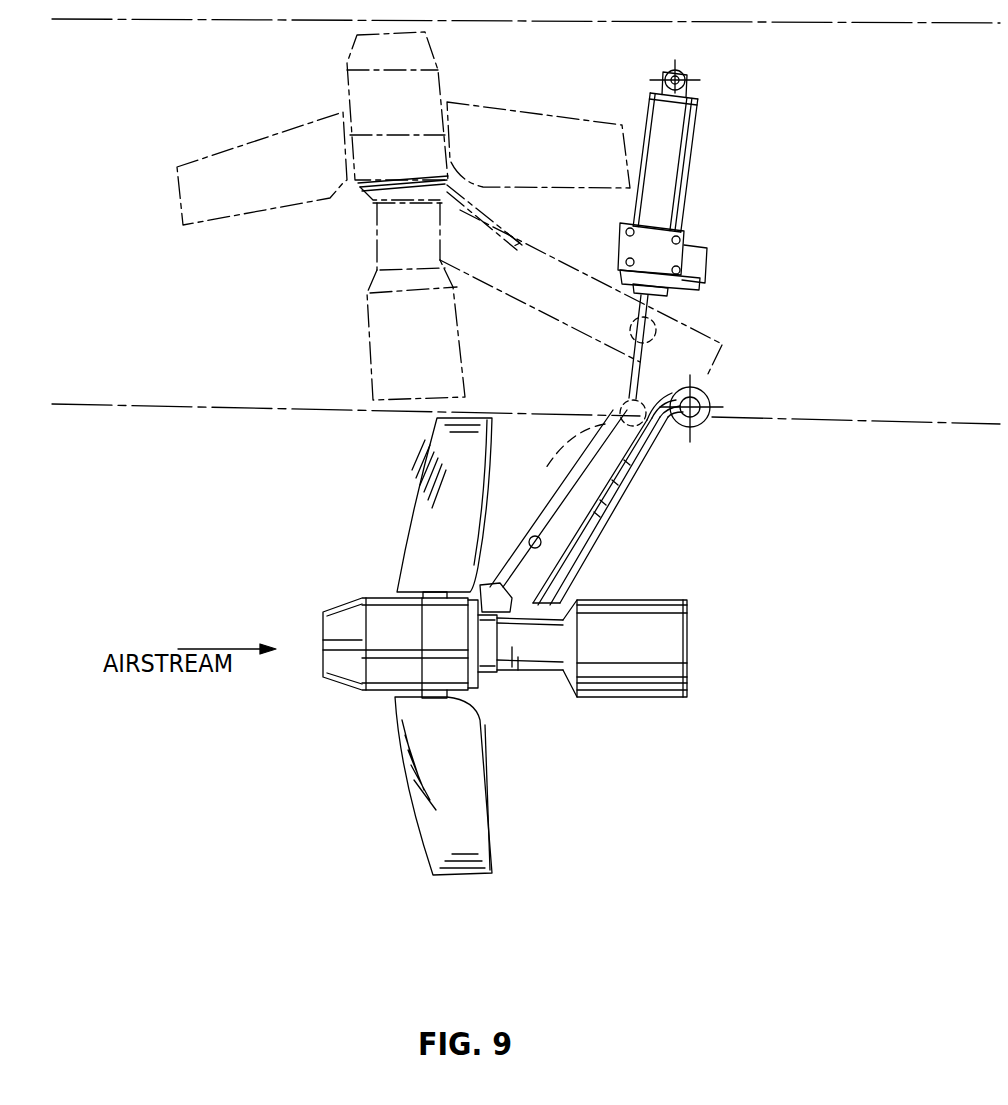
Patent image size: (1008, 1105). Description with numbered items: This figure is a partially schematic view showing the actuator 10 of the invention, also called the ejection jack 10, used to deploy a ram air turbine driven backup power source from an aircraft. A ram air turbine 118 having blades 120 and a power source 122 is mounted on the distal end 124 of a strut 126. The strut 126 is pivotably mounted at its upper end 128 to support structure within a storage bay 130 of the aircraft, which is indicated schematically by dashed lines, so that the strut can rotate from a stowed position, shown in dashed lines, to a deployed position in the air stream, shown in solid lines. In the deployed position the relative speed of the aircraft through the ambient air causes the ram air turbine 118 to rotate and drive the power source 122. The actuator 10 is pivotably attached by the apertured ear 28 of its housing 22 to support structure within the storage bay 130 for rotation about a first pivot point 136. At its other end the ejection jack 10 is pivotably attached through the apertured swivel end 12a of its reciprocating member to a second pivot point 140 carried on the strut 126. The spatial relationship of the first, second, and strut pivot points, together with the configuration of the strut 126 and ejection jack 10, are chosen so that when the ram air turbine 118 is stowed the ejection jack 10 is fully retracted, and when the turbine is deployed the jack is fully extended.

The actuator 10 is at (629, 318).
The housing 22 is at (690, 172).
The apertured ear 28 is at (683, 68).
The first pivot point 136 is at (688, 76).
The upper end 128 is at (700, 400).
The apertured swivel end 12a is at (622, 404).
The second pivot point 140 is at (557, 460).
The strut 126 is at (604, 515).
The distal end 124 is at (531, 680).
The power source 122 is at (652, 690).
The blades 120 is at (437, 863).
The ram air turbine 118 is at (349, 703).
The storage bay 130 is at (276, 321).